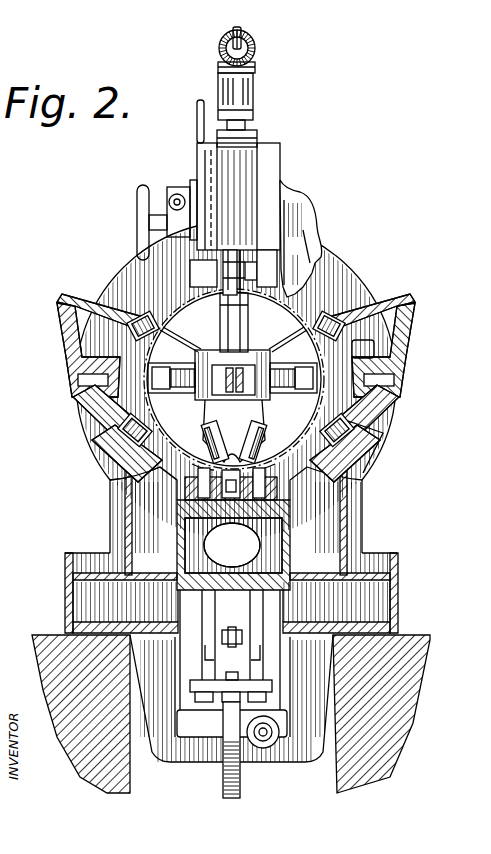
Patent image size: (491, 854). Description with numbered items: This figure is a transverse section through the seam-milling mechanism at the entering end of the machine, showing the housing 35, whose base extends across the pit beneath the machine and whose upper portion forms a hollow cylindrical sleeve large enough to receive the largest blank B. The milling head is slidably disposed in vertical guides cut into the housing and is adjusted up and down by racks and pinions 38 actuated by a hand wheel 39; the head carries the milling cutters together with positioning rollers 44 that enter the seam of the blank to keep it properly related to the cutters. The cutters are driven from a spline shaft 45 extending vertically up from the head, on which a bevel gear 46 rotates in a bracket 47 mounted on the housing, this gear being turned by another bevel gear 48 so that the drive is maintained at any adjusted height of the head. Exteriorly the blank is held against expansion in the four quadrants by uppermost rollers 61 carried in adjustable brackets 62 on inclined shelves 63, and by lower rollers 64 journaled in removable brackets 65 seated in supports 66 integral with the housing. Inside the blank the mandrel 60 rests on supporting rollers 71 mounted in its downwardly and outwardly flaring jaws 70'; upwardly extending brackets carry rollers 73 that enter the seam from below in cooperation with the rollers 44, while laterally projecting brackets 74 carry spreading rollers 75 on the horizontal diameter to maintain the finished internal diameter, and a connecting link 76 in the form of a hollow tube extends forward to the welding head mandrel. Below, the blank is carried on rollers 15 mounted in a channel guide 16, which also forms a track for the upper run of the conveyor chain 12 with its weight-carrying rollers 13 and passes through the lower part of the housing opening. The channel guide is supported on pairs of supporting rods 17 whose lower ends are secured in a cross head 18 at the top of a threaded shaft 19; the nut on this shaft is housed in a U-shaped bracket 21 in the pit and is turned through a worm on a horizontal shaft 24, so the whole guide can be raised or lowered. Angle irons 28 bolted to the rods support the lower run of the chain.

The spline shaft 45 is at (233, 30).
The bevel gear 48 is at (256, 47).
The bevel gear 46 is at (256, 65).
The bracket 47 is at (254, 96).
The racks and pinions 38 is at (182, 186).
The hand wheel 39 is at (137, 200).
The positioning rollers 44 is at (234, 252).
The blank B is at (318, 230).
The uppermost positioning rollers 61 is at (148, 312).
The adjustable brackets 62 is at (64, 292).
The inclined shelves 63 is at (60, 333).
The rollers 73 is at (220, 316).
The mandrel 60 is at (258, 352).
The spreading rollers 75 is at (168, 373).
The laterally projecting brackets 74 is at (298, 373).
The connecting link 76 is at (325, 358).
The brackets 65 is at (80, 408).
The supports 66 is at (96, 442).
The lower positioning rollers 64 is at (146, 426).
The jaws 70' is at (232, 442).
The supporting rollers 71 is at (196, 466).
The housing 35 is at (385, 435).
The rollers 15 is at (150, 470).
The channel guide 16 is at (290, 500).
The rollers 13 is at (232, 545).
The supporting rods 17 is at (207, 553).
The angle irons 28 is at (262, 645).
The chain 12 is at (222, 636).
The cross head 18 is at (190, 686).
The threaded shaft 19 is at (222, 791).
The shaft 24 is at (265, 748).
The U-shaped bracket 21 is at (305, 745).